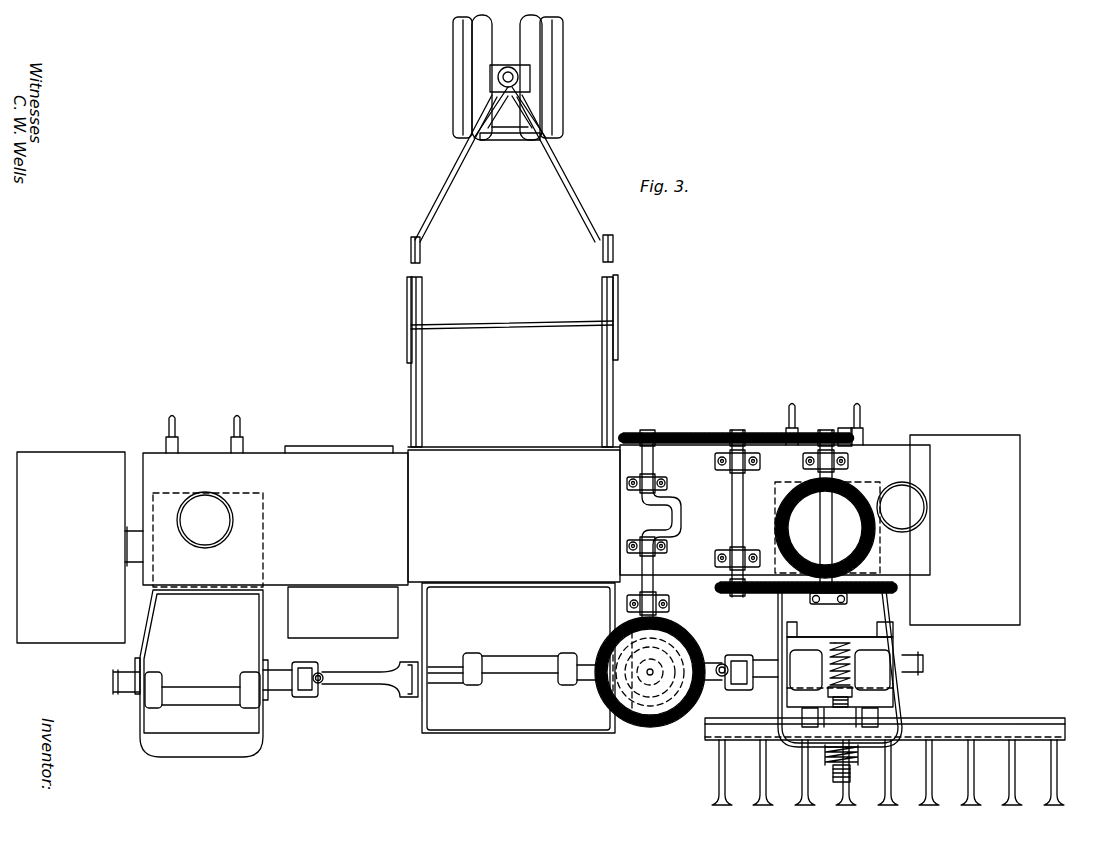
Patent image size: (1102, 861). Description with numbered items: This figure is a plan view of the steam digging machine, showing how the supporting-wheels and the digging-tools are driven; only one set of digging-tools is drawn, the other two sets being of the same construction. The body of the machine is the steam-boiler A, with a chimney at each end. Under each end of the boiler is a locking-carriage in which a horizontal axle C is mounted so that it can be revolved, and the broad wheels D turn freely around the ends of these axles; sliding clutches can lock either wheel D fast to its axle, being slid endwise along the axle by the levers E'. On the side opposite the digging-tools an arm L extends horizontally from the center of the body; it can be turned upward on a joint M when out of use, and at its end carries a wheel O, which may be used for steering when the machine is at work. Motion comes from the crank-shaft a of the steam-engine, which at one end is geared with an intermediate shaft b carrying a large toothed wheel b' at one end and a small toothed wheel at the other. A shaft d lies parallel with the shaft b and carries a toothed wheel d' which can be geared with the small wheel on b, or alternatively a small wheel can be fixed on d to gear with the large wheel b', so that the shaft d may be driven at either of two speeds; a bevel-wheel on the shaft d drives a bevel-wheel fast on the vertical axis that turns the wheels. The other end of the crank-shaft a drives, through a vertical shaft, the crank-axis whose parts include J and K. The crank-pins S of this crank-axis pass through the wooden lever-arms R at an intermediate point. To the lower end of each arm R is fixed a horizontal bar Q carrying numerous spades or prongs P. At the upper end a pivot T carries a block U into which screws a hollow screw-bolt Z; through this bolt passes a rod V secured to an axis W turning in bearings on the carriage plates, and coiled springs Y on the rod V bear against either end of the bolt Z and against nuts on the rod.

The wheel O is at (506, 77).
The arm L is at (507, 168).
The joint M is at (509, 341).
The steam-boiler A is at (536, 516).
The levers E' is at (523, 418).
The broad wheels D is at (518, 539).
The crank-pins S is at (354, 673).
The pivot T is at (202, 680).
The crank-axis part J is at (518, 658).
The horizontal axles C is at (686, 672).
The crank-shaft a is at (654, 525).
The large toothed wheel b' is at (736, 428).
The intermediate shaft b is at (737, 513).
The shaft d is at (827, 508).
The toothed wheel d' is at (841, 600).
The axis W is at (840, 627).
The crank-axis part K is at (840, 672).
The rod V is at (847, 664).
The coiled springs Y is at (845, 706).
The hollow screw-bolt Z is at (838, 739).
The lever-arm R is at (840, 717).
The block U is at (840, 717).
The horizontal bar Q is at (887, 729).
The digging forks or spades P is at (888, 772).